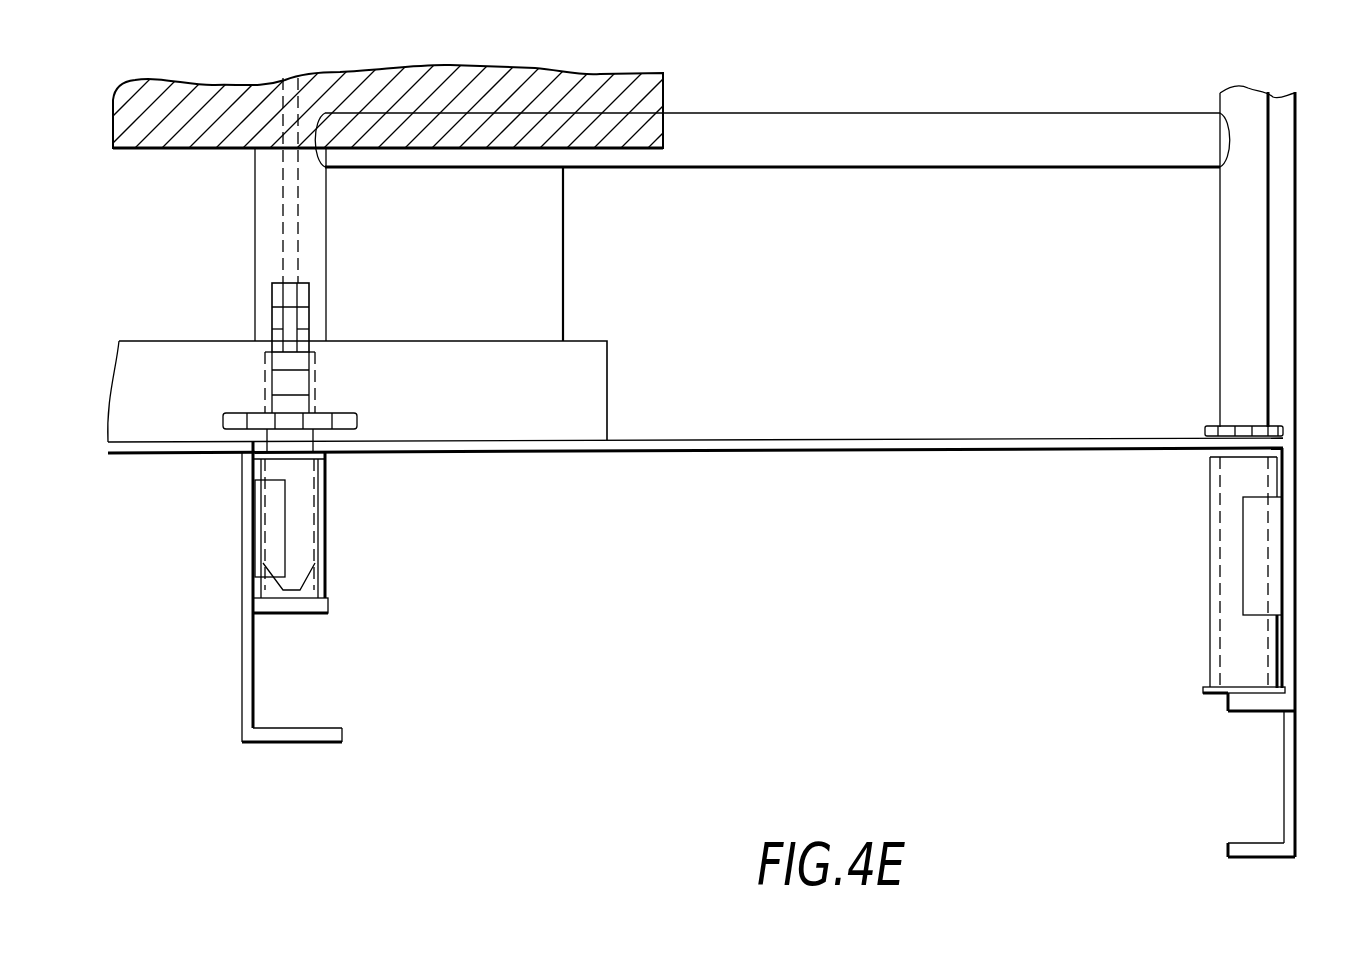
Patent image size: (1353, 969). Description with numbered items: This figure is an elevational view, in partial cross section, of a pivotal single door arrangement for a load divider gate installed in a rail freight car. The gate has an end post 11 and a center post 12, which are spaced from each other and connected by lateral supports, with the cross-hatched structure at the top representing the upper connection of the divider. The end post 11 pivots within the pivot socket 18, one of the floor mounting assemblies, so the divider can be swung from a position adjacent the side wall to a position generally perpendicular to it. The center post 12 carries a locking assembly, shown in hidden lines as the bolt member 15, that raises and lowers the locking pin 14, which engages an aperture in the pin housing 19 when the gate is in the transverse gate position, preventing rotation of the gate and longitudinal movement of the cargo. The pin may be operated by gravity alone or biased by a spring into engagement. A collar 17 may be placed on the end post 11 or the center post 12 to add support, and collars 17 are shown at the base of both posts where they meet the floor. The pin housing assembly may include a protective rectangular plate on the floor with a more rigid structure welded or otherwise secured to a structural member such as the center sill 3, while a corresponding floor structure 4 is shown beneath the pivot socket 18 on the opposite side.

The center sill 3 is at (242, 674).
The right bracket 4 is at (1297, 795).
The end post 11 is at (1230, 228).
The center post 12 is at (255, 216).
The locking pin 14 is at (305, 511).
The bolt 15 is at (290, 242).
The collar 17 is at (338, 415).
The pivot socket 18 is at (1285, 649).
The pin housing 19 is at (325, 578).